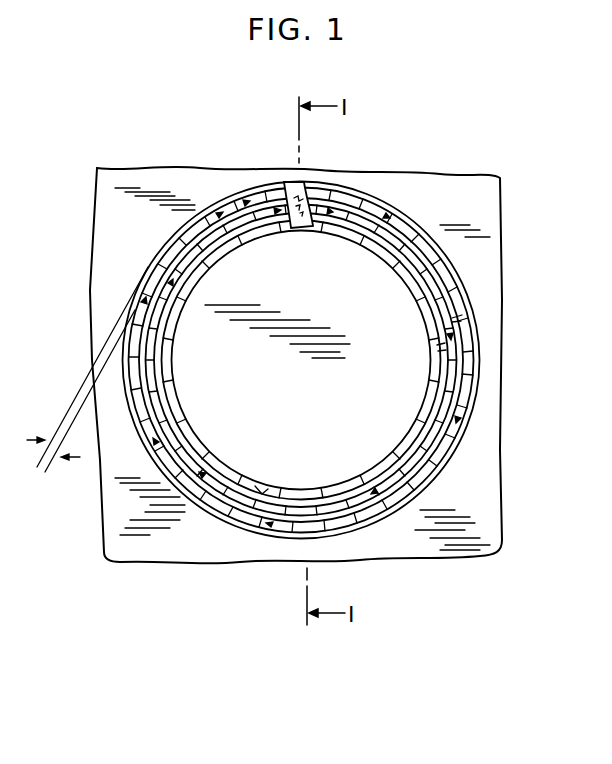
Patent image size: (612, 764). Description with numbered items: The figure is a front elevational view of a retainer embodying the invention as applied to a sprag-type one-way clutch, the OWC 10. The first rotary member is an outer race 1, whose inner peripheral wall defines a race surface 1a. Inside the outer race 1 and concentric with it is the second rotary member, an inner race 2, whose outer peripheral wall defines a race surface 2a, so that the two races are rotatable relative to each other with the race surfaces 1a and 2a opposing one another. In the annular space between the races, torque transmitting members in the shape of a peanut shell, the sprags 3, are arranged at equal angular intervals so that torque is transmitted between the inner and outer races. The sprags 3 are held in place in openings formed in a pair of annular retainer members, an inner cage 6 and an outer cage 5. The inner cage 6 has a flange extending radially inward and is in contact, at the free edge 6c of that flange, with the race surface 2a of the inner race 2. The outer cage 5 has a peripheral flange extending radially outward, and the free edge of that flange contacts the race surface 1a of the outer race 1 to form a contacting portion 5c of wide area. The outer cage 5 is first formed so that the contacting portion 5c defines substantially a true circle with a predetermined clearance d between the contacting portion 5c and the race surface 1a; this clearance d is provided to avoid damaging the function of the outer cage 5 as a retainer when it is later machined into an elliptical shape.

The outer race 1 is at (473, 552).
The race surface 1a is at (262, 530).
The inner race 2 is at (342, 360).
The race surface 2a is at (262, 487).
The sprag 3 is at (308, 212).
The outer cage 5 is at (340, 363).
The contacting portion 5c is at (470, 362).
The inner cage 6 is at (301, 360).
The free edge 6c is at (440, 352).
The one-way clutch 10 is at (426, 218).
The clearance d is at (52, 448).